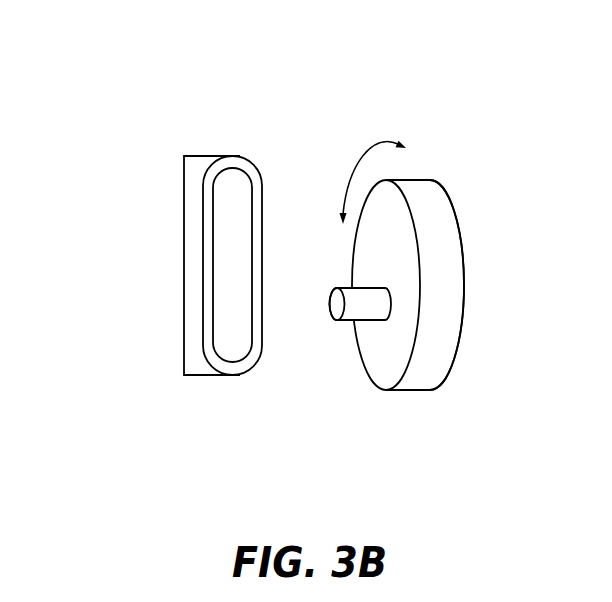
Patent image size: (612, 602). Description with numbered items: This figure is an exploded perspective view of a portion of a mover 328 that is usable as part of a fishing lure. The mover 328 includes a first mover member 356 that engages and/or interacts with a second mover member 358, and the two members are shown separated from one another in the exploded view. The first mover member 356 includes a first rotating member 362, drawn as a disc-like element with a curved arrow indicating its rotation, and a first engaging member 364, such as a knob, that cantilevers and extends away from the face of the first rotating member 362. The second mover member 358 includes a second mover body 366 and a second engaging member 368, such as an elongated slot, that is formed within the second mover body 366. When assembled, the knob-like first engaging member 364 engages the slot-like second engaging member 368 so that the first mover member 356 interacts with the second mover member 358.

The mover 328 is at (114, 122).
The second mover member 358 is at (195, 341).
The second mover body 366 is at (198, 160).
The second engaging member 368 is at (237, 174).
The first rotating member 362 is at (447, 262).
The first mover member 356 is at (448, 303).
The first engaging member 364 is at (363, 312).